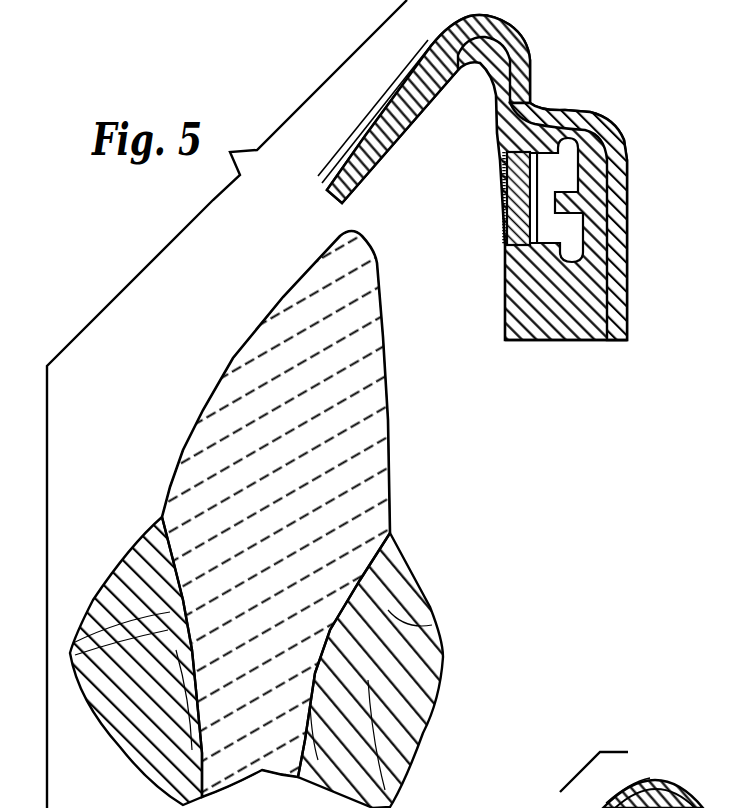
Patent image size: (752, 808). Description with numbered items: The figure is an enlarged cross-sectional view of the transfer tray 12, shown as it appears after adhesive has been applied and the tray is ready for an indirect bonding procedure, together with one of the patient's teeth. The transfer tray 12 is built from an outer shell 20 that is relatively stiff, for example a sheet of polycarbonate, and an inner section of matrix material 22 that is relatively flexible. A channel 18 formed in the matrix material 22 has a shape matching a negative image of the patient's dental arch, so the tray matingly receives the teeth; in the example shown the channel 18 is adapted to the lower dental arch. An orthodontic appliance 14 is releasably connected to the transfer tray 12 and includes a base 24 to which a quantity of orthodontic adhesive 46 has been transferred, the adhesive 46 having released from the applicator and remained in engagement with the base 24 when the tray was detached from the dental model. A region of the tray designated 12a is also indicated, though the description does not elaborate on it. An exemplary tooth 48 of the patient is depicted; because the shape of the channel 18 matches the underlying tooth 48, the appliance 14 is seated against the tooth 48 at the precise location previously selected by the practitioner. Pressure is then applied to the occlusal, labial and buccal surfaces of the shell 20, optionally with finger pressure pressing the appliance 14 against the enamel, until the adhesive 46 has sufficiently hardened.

The transfer tray 12 is at (498, 192).
The weatherstrip seal portion 12a is at (687, 782).
The orthodontic appliance 14 is at (584, 174).
The channel 18 is at (442, 82).
The outer shell 20 is at (620, 297).
The matrix material 22 is at (590, 337).
The base 24 is at (502, 222).
The orthodontic adhesive 46 is at (500, 183).
The tooth 48 is at (290, 312).